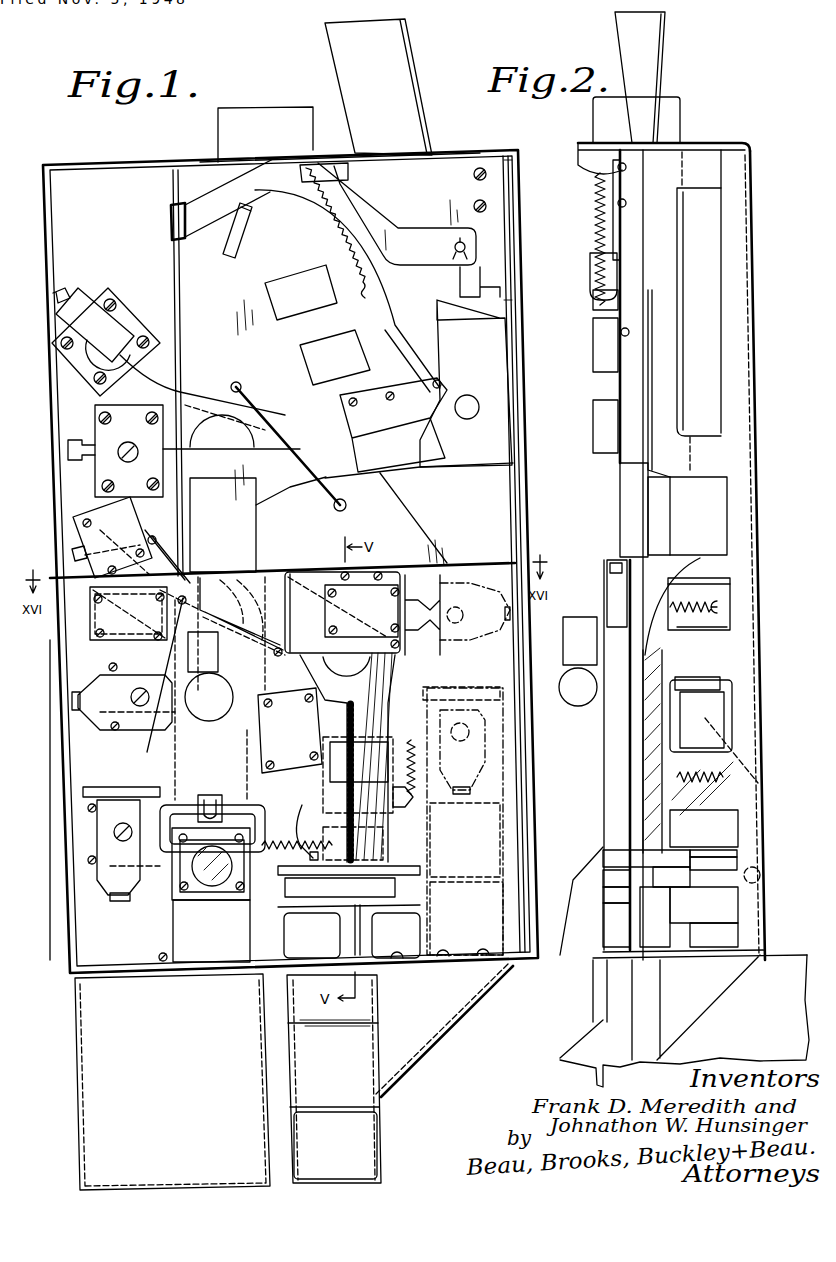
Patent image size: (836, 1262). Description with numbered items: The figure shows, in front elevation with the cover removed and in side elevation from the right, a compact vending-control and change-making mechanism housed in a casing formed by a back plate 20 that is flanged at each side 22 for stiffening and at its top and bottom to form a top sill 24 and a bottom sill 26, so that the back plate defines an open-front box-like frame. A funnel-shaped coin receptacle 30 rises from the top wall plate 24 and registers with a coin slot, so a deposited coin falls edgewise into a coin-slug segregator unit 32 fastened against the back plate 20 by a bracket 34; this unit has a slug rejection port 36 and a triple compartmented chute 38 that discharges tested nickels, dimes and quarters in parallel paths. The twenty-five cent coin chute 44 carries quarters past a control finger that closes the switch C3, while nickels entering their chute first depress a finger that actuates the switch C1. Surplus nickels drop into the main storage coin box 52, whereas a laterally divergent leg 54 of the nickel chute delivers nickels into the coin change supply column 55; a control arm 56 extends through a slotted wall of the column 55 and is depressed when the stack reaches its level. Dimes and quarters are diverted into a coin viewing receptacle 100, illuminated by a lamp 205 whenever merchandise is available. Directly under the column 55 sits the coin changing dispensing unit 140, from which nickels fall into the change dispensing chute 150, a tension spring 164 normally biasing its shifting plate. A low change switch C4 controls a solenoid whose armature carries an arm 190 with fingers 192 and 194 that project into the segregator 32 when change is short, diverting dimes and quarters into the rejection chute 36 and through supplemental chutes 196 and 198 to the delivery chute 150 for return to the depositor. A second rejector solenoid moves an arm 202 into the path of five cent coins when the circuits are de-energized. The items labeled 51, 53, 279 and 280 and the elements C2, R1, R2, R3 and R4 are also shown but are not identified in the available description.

In FIG. 1, the back plate 20 is at (103, 232).
In FIG. 2, the back plate 20 is at (748, 223).
In FIG. 1, the side flange 22 is at (48, 298).
In FIG. 2, the side flange 22 is at (735, 267).
In FIG. 1, the top sill 24 is at (440, 230).
In FIG. 2, the top sill 24 is at (706, 142).
In FIG. 1, the bottom sill 26 is at (517, 962).
In FIG. 2, the bottom sill 26 is at (723, 951).
In FIG. 1, the coin receptacle 30 is at (405, 82).
In FIG. 2, the coin receptacle 30 is at (657, 45).
In FIG. 1, the coin-slug segregator unit 32 is at (298, 256).
In FIG. 2, the coin-slug segregator unit 32 is at (688, 305).
In FIG. 1, the bracket 34 is at (176, 266).
In FIG. 2, the bracket 34 is at (704, 437).
In FIG. 1, the slug rejection port 36 is at (474, 527).
In FIG. 2, the slug rejection port 36 is at (630, 527).
In FIG. 1, the triple compartmented chute 38 is at (231, 541).
In FIG. 1, the 25 cent coin chute 44 is at (252, 666).
In FIG. 2, the 25 cent coin chute 44 is at (671, 705).
In FIG. 1, the spring 51 is at (388, 755).
In FIG. 2, the spring 51 is at (713, 763).
In FIG. 1, the coin box 52 is at (497, 917).
In FIG. 2, the coin box 52 is at (730, 908).
In FIG. 1, the contact block 53 is at (497, 842).
In FIG. 2, the contact block 53 is at (723, 826).
In FIG. 1, the laterally divergent chute leg 54 is at (110, 432).
In FIG. 1, the coin change supply column 55 is at (130, 308).
In FIG. 2, the coin change supply column 55 is at (613, 748).
In FIG. 1, the control arm 56 is at (93, 573).
In FIG. 1, the coin viewing receptacle 100 is at (165, 897).
In FIG. 2, the coin viewing receptacle 100 is at (600, 855).
In FIG. 1, the coin changing dispensing unit 140 is at (249, 912).
In FIG. 2, the coin changing dispensing unit 140 is at (599, 912).
In FIG. 1, the change dispensing chute 150 is at (348, 1151).
In FIG. 2, the change dispensing chute 150 is at (580, 1048).
In FIG. 1, the tension spring 164 is at (317, 790).
In FIG. 1, the coin reject control arm 190 is at (251, 446).
In FIG. 1, the finger 192 is at (242, 383).
In FIG. 1, the finger 194 is at (348, 505).
In FIG. 1, the supplemental chute 196 is at (513, 792).
In FIG. 1, the supplemental chute 198 is at (432, 1033).
In FIG. 1, the coin rejector arm 202 is at (173, 390).
In FIG. 1, the lamp 205 is at (205, 732).
In FIG. 2, the lamp 205 is at (583, 683).
In FIG. 1, the spring 279 is at (372, 302).
In FIG. 2, the spring 279 is at (600, 239).
In FIG. 1, the end cap 280 is at (170, 222).
In FIG. 1, the switch C1 is at (130, 530).
In FIG. 1, the condenser C2 is at (337, 633).
In FIG. 1, the switch C3 is at (92, 642).
In FIG. 1, the low change switch C4 is at (270, 712).
In FIG. 1, the relay R1 is at (103, 677).
In FIG. 1, the relay R2 is at (478, 600).
In FIG. 2, the relay R2 is at (715, 591).
In FIG. 1, the relay R3 is at (461, 740).
In FIG. 2, the relay R3 is at (713, 706).
In FIG. 1, the relay R4 is at (123, 789).